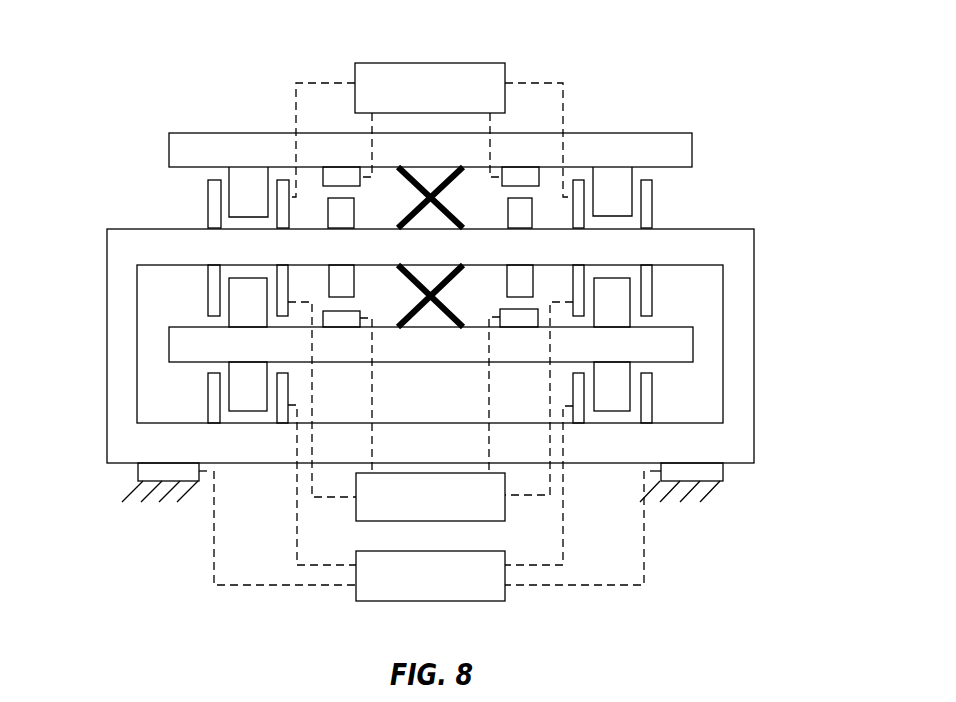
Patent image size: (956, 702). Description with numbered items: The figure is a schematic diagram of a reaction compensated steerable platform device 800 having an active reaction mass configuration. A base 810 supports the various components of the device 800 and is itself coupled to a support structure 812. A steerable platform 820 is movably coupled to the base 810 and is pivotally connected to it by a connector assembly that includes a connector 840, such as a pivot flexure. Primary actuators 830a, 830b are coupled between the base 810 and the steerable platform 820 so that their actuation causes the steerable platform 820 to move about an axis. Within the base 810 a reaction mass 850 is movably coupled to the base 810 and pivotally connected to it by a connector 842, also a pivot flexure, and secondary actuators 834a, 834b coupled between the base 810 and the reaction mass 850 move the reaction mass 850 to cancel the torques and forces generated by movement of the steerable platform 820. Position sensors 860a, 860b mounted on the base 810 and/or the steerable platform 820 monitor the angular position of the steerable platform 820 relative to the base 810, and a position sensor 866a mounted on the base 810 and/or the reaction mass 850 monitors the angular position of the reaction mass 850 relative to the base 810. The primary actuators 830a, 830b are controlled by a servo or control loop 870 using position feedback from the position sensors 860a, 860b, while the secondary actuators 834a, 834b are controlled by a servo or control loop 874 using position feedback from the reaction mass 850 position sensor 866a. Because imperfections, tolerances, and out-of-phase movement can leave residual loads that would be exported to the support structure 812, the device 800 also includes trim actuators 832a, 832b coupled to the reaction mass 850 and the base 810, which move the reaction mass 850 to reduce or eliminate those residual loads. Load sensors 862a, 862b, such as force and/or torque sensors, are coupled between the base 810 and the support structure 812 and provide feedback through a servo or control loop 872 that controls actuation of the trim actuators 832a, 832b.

The reaction compensated steerable platform device 800 is at (235, 44).
The base 810 is at (107, 357).
The support structure 812 is at (140, 509).
The steerable platform 820 is at (169, 150).
The primary actuator 830a is at (203, 190).
The primary actuator 830b is at (666, 196).
The trim actuator 832a is at (196, 397).
The trim actuator 832b is at (665, 399).
The secondary actuator 834a is at (196, 303).
The secondary actuator 834b is at (665, 306).
The connector 840 is at (449, 182).
The connector 842 is at (447, 283).
The reaction mass 850 is at (169, 337).
The position sensor 860a is at (312, 191).
The position sensor 860b is at (547, 190).
The load sensor 862a is at (138, 473).
The load sensor 862b is at (723, 470).
The position sensor 866a is at (321, 297).
The servo or control loop 870 is at (488, 51).
The servo or control loop 872 is at (368, 614).
The servo or control loop 874 is at (514, 510).